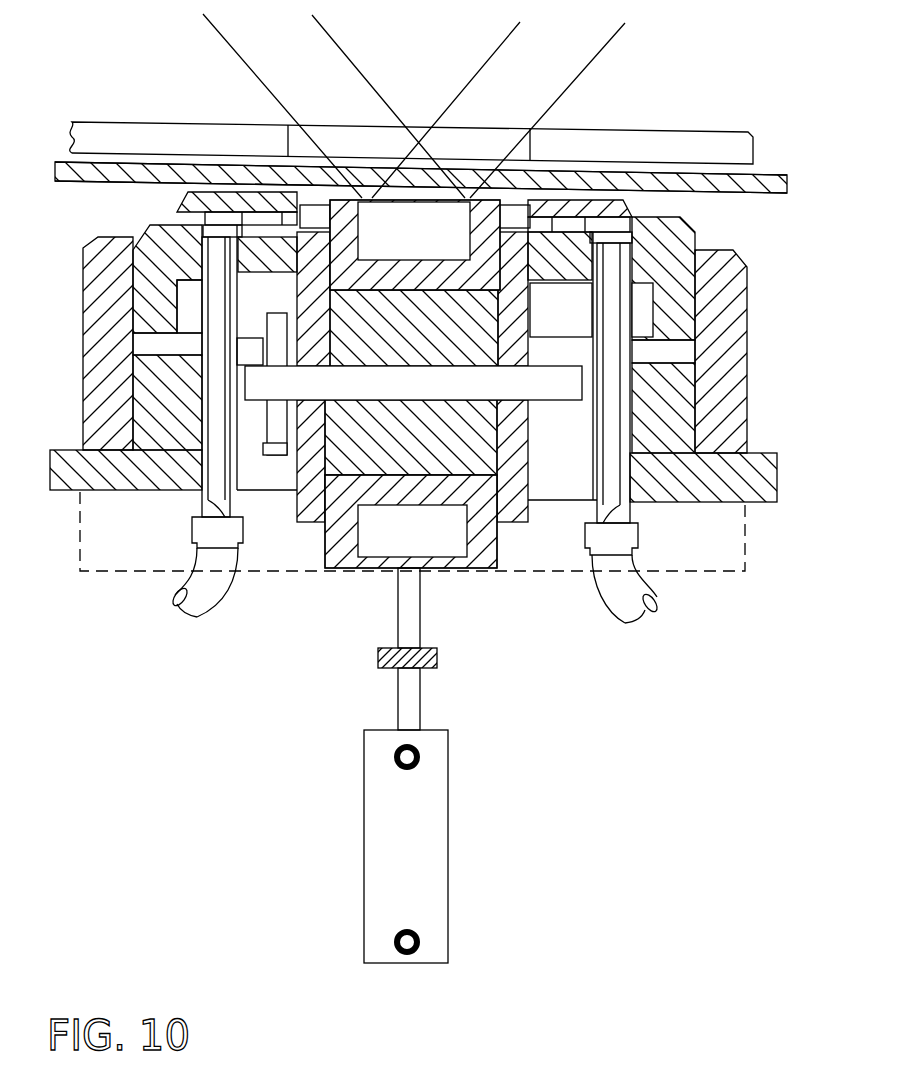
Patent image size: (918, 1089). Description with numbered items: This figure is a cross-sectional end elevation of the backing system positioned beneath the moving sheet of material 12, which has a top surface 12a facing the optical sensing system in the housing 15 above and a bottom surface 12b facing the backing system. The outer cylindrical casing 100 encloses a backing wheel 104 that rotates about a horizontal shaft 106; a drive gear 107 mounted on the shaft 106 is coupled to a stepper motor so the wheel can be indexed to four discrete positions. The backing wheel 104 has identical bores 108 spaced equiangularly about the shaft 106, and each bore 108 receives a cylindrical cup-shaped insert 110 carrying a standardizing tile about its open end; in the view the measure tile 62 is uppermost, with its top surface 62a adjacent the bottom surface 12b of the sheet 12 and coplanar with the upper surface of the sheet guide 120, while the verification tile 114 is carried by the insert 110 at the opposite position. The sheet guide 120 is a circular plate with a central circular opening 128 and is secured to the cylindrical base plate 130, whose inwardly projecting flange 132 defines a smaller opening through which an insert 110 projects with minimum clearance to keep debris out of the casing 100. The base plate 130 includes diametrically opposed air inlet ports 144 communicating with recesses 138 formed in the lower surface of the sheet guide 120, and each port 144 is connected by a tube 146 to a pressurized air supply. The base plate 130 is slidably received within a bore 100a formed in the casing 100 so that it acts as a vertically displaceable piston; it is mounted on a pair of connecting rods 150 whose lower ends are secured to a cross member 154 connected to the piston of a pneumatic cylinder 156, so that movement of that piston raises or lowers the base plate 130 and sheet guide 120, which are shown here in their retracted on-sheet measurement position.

The housing 15 is at (676, 142).
The moving sheet of material 12 is at (788, 183).
The top surface 12a is at (778, 178).
The bottom surface 12b is at (784, 193).
The measure tile 62 is at (400, 204).
The top surface of tile 62a is at (388, 200).
The inwardly projecting flange 132 is at (316, 200).
The central circular opening 128 is at (536, 200).
The recesses 138 is at (212, 224).
The air inlet ports 144 is at (212, 232).
The sheet guide 120 is at (638, 227).
The tube 146 is at (175, 403).
The cylindrical base plate 130 is at (735, 266).
The bore 100a is at (747, 313).
The outer cylindrical casing 100 is at (747, 405).
The drive gear 107 is at (280, 480).
The horizontal shaft 106 is at (425, 367).
The cup-shaped insert 110 is at (402, 282).
The bores 108 is at (307, 291).
The verification tile 114 is at (389, 553).
The backing wheel 104 is at (517, 530).
The connecting rods 150 is at (421, 603).
The cross member 154 is at (437, 658).
The pneumatic cylinder 156 is at (447, 836).